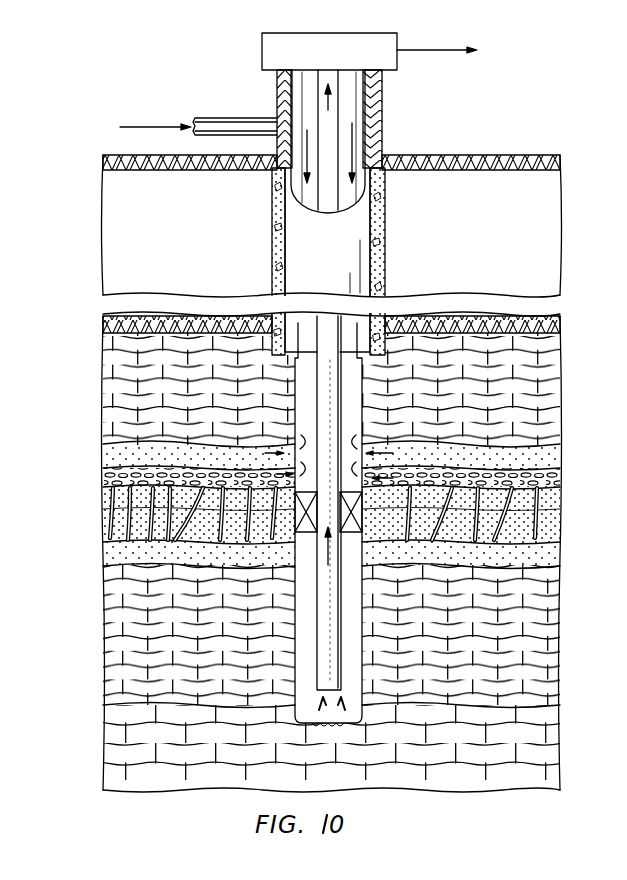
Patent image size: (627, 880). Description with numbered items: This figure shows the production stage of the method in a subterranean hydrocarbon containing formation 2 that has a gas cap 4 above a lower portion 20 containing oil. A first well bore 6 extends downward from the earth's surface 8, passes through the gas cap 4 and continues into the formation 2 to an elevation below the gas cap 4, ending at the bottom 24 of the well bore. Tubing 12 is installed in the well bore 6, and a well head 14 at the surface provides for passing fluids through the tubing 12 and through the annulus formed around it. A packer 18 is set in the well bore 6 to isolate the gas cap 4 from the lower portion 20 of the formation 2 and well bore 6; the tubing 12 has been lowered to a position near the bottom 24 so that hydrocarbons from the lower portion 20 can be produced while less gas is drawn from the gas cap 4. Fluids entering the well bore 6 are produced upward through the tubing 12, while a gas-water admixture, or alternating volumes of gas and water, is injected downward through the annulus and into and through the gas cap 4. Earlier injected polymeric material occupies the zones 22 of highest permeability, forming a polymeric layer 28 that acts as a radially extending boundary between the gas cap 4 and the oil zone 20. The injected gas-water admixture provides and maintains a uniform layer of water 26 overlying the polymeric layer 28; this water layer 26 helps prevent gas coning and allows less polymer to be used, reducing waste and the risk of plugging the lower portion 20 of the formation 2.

The subterranean hydrocarbon containing formation 2 is at (486, 638).
The gas cap 4 is at (222, 465).
The first well bore 6 is at (363, 662).
The earth's surface 8 is at (465, 155).
The tubing 12 is at (317, 622).
The well head 14 is at (262, 50).
The packer 18 is at (364, 510).
The lower portion of the formation 20 is at (525, 686).
The zones of high permeability 22 is at (556, 527).
The bottom of the well bore 24 is at (336, 726).
The layer of water 26 is at (556, 481).
The polymeric layer 28 is at (556, 501).